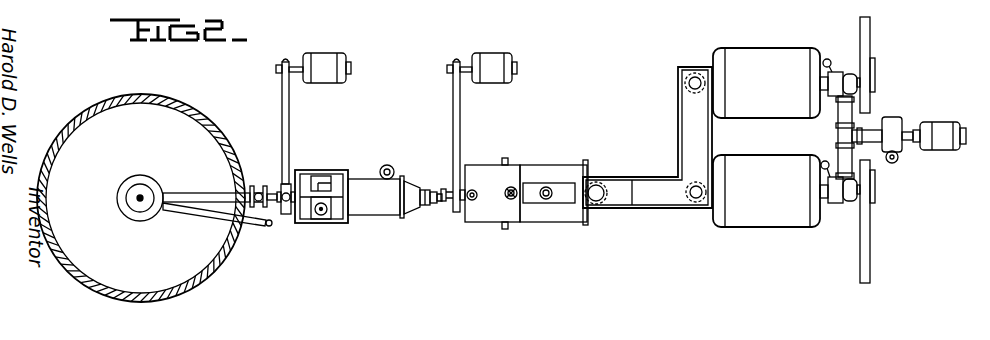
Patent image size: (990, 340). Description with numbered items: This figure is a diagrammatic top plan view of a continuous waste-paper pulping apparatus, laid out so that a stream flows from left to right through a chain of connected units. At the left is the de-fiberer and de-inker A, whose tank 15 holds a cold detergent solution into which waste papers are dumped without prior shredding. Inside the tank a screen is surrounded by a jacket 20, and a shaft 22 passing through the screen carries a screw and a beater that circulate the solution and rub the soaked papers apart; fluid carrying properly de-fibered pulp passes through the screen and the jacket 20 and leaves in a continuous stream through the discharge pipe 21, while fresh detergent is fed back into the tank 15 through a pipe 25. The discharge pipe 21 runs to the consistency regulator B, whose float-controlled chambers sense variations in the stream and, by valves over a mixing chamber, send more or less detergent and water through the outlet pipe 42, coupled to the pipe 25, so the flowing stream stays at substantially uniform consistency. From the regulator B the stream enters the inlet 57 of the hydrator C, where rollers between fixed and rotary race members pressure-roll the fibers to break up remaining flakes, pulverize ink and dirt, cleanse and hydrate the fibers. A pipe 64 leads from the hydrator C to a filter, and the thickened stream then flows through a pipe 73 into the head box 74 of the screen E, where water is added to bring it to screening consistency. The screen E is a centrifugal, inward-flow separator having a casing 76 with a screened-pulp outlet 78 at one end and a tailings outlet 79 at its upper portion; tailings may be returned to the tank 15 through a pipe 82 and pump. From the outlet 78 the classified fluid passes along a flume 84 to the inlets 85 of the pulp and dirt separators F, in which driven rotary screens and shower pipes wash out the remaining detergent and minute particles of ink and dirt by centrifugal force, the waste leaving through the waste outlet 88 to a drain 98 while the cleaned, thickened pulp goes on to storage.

The de-fiberer and de-inker A is at (141, 188).
The tank 15 is at (176, 103).
The jacket 20 is at (118, 215).
The shaft 22 is at (141, 196).
The discharge pipe 21 is at (200, 191).
The pipe 25 is at (180, 213).
The outlet pipe 42 is at (271, 226).
The inlet 57 is at (313, 92).
The consistency regulator B is at (328, 167).
The hydrator C is at (376, 206).
The pipe 64 is at (391, 166).
The pipe 73 is at (512, 186).
The pipe 82 is at (548, 186).
The head box 74 is at (487, 222).
The casing 76 is at (539, 220).
The tailings outlet 79 is at (560, 204).
The screened-pulp outlet 78 is at (612, 206).
The screen E is at (590, 160).
The flume 84 is at (690, 101).
The inlets 85 is at (695, 73).
The pulp and dirt separators F is at (766, 137).
The waste outlet 88 is at (808, 101).
The drain 98 is at (901, 141).